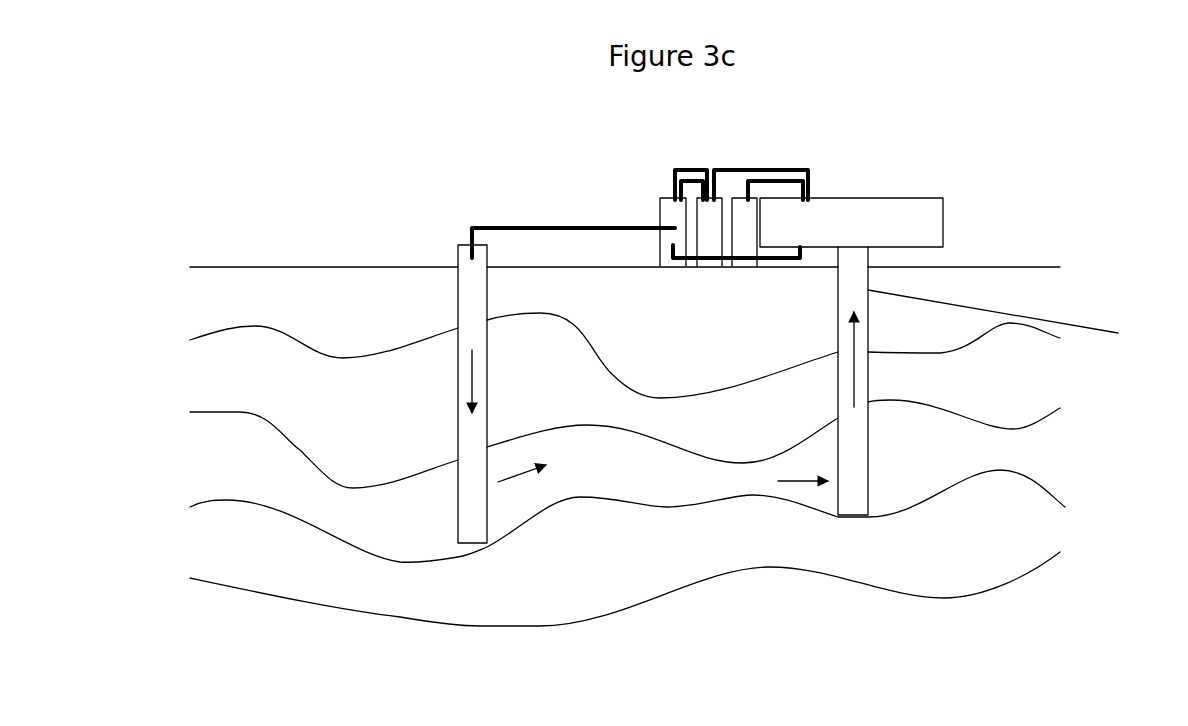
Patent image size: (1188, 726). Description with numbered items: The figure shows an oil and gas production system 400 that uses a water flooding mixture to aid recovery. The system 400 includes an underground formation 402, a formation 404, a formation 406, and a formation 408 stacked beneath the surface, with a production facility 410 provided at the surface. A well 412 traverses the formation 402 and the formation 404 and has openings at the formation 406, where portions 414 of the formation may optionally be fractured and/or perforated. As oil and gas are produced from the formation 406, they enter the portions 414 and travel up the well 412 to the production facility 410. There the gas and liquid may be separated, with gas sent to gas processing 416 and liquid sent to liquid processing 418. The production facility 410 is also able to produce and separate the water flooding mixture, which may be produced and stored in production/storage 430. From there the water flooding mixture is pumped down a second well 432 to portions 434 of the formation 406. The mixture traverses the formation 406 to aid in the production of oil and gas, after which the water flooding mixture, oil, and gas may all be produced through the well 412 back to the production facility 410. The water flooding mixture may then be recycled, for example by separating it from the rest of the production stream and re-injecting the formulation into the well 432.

The system 400 is at (470, 155).
The underground formation 402 is at (625, 350).
The formation 404 is at (625, 425).
The formation 406 is at (627, 494).
The formation 408 is at (625, 564).
The production facility 410 is at (851, 356).
The well 412 is at (1017, 319).
The portions of formation 414 is at (882, 485).
The gas processing 416 is at (740, 218).
The liquid processing 418 is at (713, 218).
The production/storage 430 is at (672, 212).
The well 432 is at (473, 300).
The portions of formation 434 is at (505, 503).